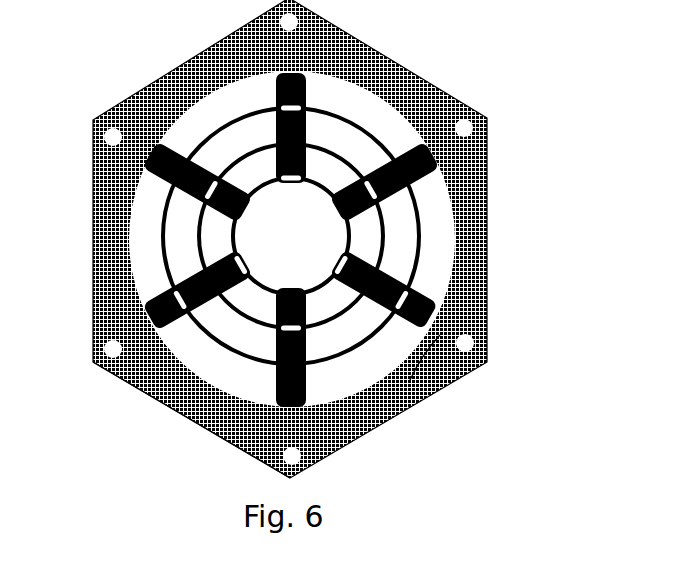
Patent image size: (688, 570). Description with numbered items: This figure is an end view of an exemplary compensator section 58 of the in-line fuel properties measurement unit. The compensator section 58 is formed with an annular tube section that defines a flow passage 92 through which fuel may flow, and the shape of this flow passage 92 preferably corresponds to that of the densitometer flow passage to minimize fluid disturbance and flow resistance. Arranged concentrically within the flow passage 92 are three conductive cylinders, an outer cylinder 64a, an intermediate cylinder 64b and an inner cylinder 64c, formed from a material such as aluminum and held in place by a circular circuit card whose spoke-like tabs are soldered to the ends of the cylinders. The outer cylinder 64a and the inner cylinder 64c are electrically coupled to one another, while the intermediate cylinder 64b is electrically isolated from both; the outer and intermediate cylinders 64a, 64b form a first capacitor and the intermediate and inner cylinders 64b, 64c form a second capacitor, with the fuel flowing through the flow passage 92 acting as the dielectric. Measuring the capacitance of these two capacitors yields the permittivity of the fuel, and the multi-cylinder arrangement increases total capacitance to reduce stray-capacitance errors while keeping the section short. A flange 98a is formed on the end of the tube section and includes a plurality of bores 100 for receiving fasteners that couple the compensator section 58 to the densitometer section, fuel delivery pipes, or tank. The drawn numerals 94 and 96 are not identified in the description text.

The compensator section 58 is at (141, 52).
The flow passage 92 is at (338, 92).
The radial ribs 94 is at (157, 182).
The outer cylinder 64a is at (415, 208).
The intermediate cylinder 64b is at (385, 230).
The inner cylinder 64c is at (350, 248).
The bores 100 is at (478, 345).
The flange 98a is at (180, 402).
The aperture edge 96 is at (399, 362).